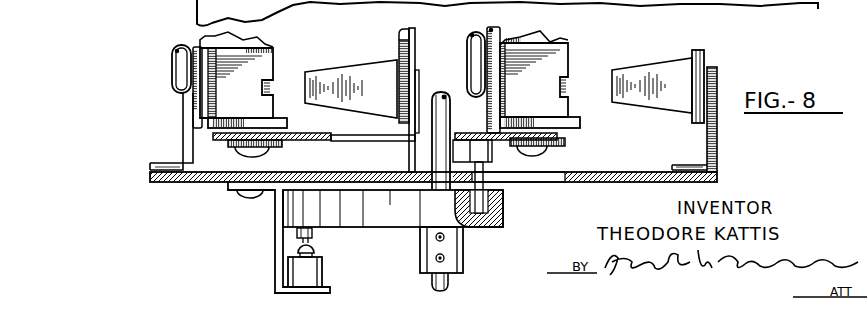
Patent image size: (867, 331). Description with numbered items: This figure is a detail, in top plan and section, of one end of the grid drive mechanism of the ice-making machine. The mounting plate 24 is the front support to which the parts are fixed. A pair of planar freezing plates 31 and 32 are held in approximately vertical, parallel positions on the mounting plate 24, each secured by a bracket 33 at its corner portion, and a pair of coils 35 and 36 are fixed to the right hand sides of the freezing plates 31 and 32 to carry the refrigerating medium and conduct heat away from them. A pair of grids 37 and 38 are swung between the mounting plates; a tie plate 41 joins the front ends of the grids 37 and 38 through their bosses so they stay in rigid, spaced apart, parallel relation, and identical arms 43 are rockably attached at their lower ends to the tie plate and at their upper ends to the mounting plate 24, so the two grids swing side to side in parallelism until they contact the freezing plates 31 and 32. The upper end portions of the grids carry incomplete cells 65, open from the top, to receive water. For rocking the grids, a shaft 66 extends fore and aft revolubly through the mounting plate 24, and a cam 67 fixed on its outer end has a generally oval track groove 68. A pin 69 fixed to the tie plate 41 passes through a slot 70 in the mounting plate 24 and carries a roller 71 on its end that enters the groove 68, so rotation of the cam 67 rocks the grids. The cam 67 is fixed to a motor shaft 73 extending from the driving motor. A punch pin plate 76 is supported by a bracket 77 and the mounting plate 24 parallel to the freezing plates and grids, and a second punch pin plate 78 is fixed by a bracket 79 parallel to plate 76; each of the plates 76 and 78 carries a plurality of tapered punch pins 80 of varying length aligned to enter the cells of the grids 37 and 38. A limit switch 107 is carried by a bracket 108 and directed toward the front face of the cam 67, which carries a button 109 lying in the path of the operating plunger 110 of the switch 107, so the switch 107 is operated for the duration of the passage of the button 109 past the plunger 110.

The mounting plate 24 is at (192, 186).
The freezing plate 31 is at (489, 28).
The freezing plate 32 is at (198, 132).
The bracket 33 is at (174, 160).
The coil 35 is at (471, 50).
The coil 36 is at (175, 70).
The grid 37 is at (559, 67).
The grid 38 is at (263, 68).
The tie plate 41 is at (302, 140).
The arm 43 is at (250, 146).
The incomplete cell 65 is at (246, 83).
The shaft 66 is at (443, 91).
The cam 67 is at (399, 216).
The track groove 68 is at (498, 229).
The pin 69 is at (488, 181).
The slot 70 is at (549, 176).
The roller 71 is at (503, 213).
The motor shaft 73 is at (450, 284).
The punch pin plate 76 is at (700, 51).
The bracket 77 is at (715, 95).
The punch pin plate 78 is at (403, 32).
The bracket 79 is at (413, 152).
The punch pin 80 is at (366, 78).
The limit switch 107 is at (308, 272).
The bracket 108 is at (276, 219).
The button 109 is at (313, 233).
The operating plunger 110 is at (315, 247).